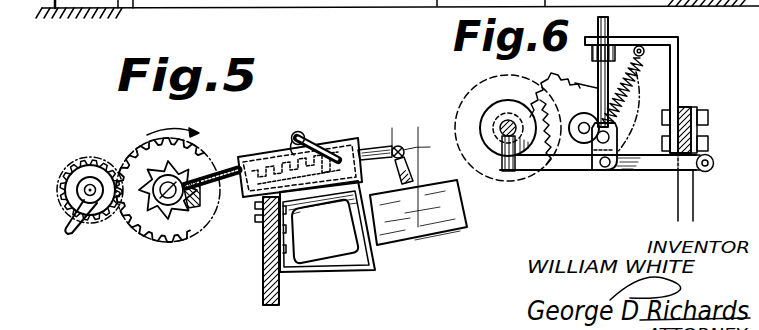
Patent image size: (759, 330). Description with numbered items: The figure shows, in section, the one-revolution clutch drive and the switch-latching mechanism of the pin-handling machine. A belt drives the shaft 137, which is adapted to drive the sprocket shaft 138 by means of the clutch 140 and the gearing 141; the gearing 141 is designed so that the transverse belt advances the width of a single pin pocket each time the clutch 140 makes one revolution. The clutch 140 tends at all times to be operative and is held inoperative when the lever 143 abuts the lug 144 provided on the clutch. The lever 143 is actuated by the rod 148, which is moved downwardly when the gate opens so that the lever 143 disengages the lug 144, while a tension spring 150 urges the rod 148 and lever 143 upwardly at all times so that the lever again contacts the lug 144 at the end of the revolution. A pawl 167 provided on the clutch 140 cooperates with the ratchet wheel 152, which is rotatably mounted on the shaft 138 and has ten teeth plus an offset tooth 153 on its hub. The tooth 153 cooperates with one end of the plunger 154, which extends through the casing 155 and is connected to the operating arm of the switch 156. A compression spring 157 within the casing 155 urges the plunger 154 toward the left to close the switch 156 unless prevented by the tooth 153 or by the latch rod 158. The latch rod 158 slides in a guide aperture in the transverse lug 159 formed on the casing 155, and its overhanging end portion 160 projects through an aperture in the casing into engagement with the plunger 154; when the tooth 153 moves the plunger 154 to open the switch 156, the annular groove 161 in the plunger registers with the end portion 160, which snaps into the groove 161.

In FIG. 5, the shaft 137 is at (84, 186).
In FIG. 5, the sprocket shaft 138 is at (153, 186).
In FIG. 5, the clutch 140 is at (63, 192).
In FIG. 6, the clutch 140 is at (488, 107).
In FIG. 5, the gearing 141 is at (132, 143).
In FIG. 6, the gearing 141 is at (532, 100).
In FIG. 6, the lever 143 is at (639, 172).
In FIG. 6, the lug 144 is at (497, 173).
In FIG. 6, the rod 148 is at (608, 25).
In FIG. 6, the tension spring 150 is at (633, 79).
In FIG. 5, the ratchet wheel 152 is at (201, 149).
In FIG. 5, the offset tooth 153 is at (183, 229).
In FIG. 5, the plunger 154 is at (218, 208).
In FIG. 5, the casing 155 is at (250, 148).
In FIG. 5, the switch 156 is at (423, 185).
In FIG. 5, the compression spring 157 is at (265, 150).
In FIG. 5, the latch rod 158 is at (305, 130).
In FIG. 5, the transverse lug 159 is at (302, 133).
In FIG. 5, the overhanging end portion 160 is at (350, 138).
In FIG. 5, the annular groove 161 is at (337, 140).
In FIG. 5, the pawl 167 is at (72, 240).